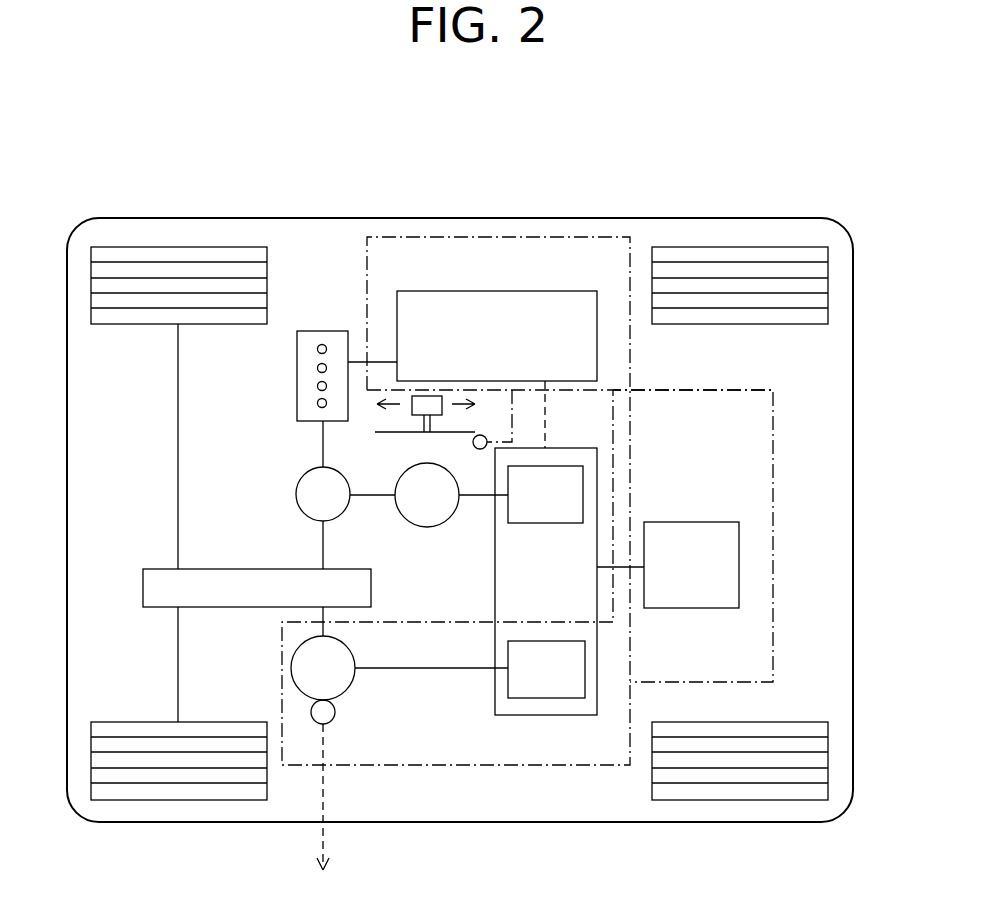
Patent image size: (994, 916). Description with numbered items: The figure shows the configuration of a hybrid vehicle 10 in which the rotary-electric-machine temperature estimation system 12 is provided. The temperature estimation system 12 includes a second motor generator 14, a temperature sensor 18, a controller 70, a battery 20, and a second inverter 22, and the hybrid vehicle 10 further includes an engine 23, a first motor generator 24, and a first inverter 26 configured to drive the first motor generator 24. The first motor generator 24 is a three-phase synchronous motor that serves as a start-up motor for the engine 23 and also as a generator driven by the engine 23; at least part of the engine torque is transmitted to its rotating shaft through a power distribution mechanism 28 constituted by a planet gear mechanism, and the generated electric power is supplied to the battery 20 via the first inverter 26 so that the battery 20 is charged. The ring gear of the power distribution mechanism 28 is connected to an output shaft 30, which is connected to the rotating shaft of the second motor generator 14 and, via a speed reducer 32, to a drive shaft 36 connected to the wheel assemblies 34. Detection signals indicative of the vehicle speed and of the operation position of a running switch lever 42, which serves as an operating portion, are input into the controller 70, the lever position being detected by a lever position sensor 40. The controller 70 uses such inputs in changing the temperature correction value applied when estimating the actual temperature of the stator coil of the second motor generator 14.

The hybrid vehicle 10 is at (841, 191).
The rotary-electric-machine temperature estimation system 12 is at (468, 236).
The second motor generator 14 is at (352, 648).
The temperature sensor 18 is at (335, 712).
The battery 20 is at (718, 522).
The second inverter 22 is at (548, 698).
The engine 23 is at (297, 379).
The first motor generator 24 is at (427, 527).
The first inverter 26 is at (572, 466).
The power distribution mechanism 28 is at (296, 496).
The output shaft 30 is at (323, 545).
The speed reducer 32 is at (220, 607).
The wheel assemblies 34 is at (178, 247).
The drive shaft 36 is at (178, 475).
The lever position sensor 40 is at (480, 449).
The running switch lever 42 is at (422, 424).
The controller 70 is at (505, 291).